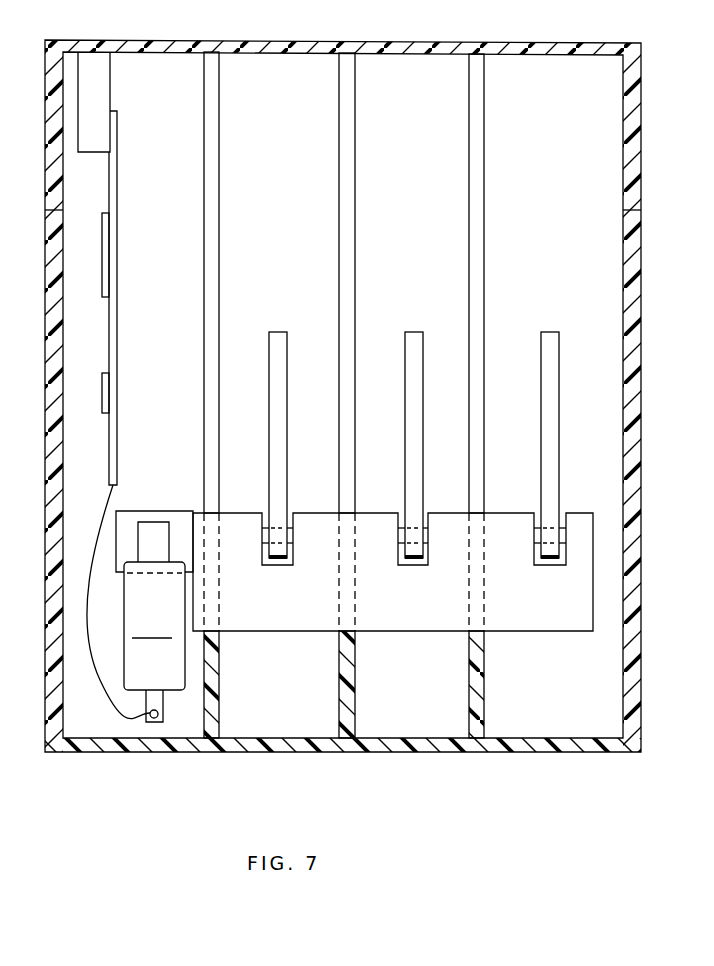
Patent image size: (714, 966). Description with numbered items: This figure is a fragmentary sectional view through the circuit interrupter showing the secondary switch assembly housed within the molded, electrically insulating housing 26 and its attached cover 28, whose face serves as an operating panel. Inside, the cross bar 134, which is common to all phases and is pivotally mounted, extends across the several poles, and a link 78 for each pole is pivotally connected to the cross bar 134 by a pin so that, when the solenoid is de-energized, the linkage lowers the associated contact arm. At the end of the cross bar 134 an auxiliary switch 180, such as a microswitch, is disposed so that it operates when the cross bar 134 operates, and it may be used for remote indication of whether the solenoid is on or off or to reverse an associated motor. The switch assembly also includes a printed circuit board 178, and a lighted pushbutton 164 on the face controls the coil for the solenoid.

The housing 26 is at (637, 478).
The cover 28 is at (636, 140).
The link 78 is at (282, 340).
The cross bar 134 is at (320, 622).
The lighted pushbutton 164 is at (93, 68).
The printed circuit board 178 is at (112, 181).
The auxiliary switch 180 is at (140, 603).